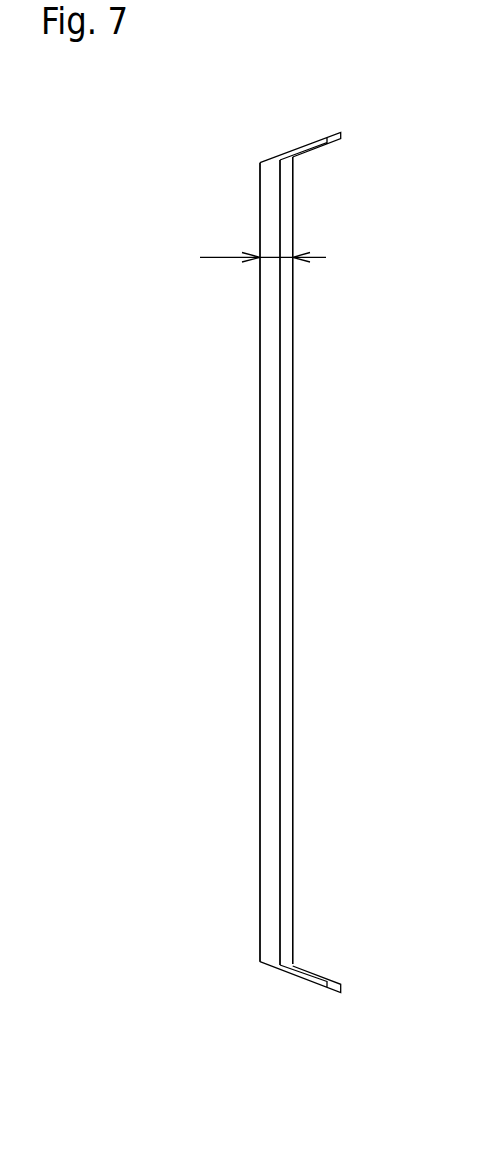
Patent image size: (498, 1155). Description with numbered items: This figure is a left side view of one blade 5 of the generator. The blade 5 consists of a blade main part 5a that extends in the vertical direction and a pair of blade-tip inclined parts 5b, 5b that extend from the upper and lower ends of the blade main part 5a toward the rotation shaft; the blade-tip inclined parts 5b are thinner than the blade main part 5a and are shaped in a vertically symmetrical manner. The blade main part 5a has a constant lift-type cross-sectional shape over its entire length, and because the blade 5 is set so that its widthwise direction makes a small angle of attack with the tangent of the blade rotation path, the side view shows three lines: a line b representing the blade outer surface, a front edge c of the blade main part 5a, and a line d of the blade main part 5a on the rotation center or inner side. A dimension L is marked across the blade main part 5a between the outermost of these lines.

The blade 5 is at (221, 520).
The blade main part 5a is at (265, 368).
The blade-tip inclined part 5b is at (303, 145).
The width of plate portion L is at (263, 243).
The line representing blade outer surface b is at (260, 600).
The front edge of the blade main part c is at (278, 645).
The line of the blade main part on the rotation center side d is at (295, 684).